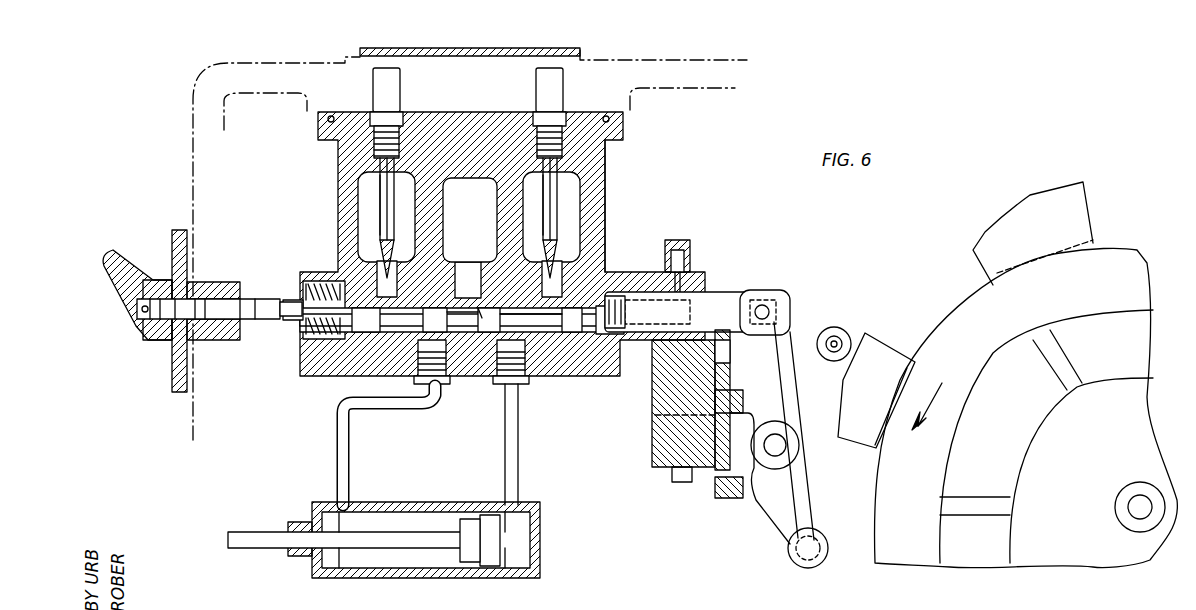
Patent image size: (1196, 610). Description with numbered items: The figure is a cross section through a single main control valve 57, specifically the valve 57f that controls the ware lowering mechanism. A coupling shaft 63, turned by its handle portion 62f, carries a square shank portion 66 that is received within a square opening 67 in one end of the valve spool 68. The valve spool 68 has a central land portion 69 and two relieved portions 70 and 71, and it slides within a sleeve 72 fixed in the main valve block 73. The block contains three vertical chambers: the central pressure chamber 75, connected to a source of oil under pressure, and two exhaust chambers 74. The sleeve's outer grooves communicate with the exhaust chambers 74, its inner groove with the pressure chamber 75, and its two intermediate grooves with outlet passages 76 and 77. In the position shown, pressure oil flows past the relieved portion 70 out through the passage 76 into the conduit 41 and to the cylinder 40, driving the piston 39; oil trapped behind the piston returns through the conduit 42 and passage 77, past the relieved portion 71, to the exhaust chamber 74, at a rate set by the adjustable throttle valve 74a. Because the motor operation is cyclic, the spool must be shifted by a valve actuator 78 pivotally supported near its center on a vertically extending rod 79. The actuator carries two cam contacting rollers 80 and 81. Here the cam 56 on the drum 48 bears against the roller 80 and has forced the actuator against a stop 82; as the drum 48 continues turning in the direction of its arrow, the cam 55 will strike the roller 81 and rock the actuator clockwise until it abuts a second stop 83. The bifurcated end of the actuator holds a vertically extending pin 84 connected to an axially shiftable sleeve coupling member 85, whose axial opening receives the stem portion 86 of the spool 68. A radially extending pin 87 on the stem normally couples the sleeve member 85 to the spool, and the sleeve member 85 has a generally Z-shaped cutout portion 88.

The piston 39 is at (490, 520).
The cylinder 40 is at (445, 500).
The inlet conduit 41 is at (335, 446).
The inlet conduit 42 is at (518, 428).
The drum 48 is at (1113, 257).
The cam 55 is at (990, 252).
The cam 56 is at (880, 362).
The main control valve 57 is at (180, 222).
The valve 57f is at (160, 348).
The handle portion 62f is at (133, 290).
The coupling shaft 63 is at (215, 305).
The square shank portion 66 is at (300, 300).
The square opening 67 is at (295, 318).
The valve spool 68 is at (350, 330).
The central land portion 69 is at (482, 312).
The relieved portion 70 is at (447, 312).
The relieved portion 71 is at (540, 318).
The sleeve 72 is at (345, 275).
The main valve block 73 is at (600, 175).
The exhaust chamber 74 is at (372, 217).
The adjustable throttle valve 74a is at (628, 184).
The pressure chamber 75 is at (470, 220).
The outlet passage 76 is at (446, 360).
The outlet passage 77 is at (525, 360).
The valve actuator 78 is at (784, 320).
The rod 79 is at (790, 445).
The cam contacting roller 80 is at (850, 330).
The cam roller 81 is at (806, 566).
The stop 82 is at (740, 392).
The second stop 83 is at (736, 498).
The pin 84 is at (768, 308).
The sleeve coupling member 85 is at (720, 296).
The stem portion 86 is at (622, 268).
The radially extending pin 87 is at (680, 292).
The cutout portion 88 is at (635, 298).